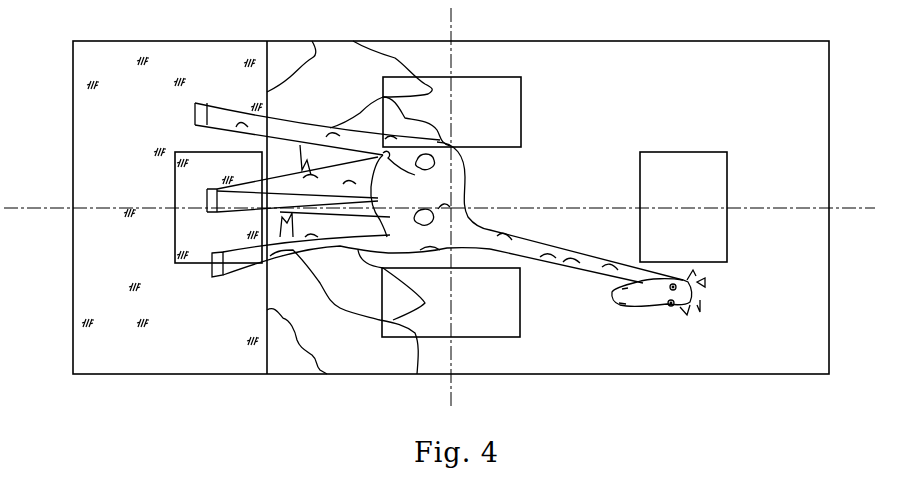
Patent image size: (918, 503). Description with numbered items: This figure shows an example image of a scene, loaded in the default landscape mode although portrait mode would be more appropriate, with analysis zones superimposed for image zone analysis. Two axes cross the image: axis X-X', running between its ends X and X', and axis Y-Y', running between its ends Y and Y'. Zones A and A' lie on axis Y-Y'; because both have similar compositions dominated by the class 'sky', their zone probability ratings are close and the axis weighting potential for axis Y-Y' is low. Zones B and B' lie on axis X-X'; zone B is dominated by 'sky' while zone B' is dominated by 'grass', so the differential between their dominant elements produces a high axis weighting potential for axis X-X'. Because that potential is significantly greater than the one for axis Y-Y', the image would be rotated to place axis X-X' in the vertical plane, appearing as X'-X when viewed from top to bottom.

The analysis zone A is at (452, 112).
The analysis zone A' is at (451, 302).
The analysis zone B is at (683, 207).
The analysis zone B' is at (218, 207).
The axis end X is at (663, 199).
The axis end X' is at (227, 198).
The axis end Y is at (459, 108).
The axis end Y' is at (461, 307).